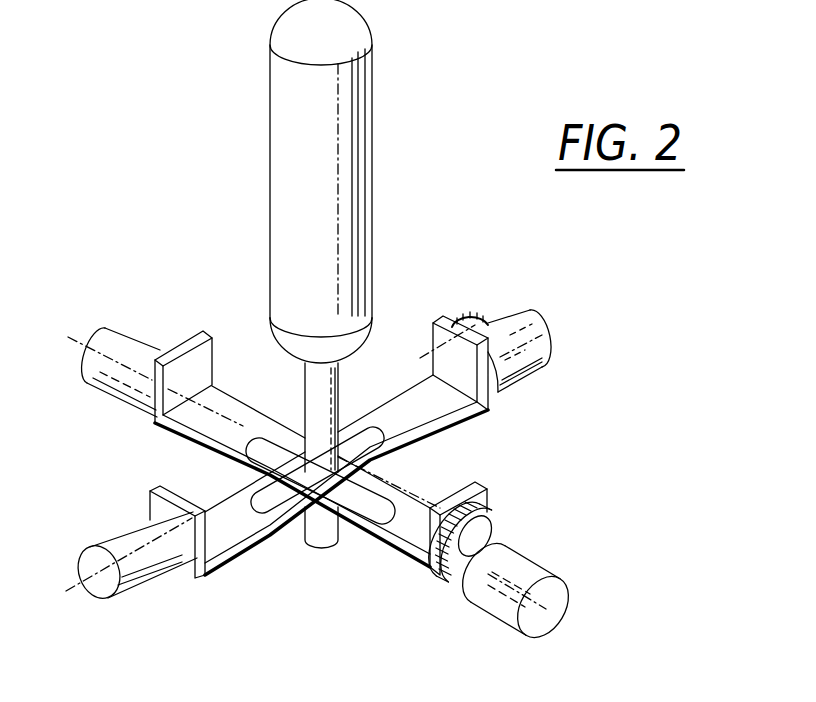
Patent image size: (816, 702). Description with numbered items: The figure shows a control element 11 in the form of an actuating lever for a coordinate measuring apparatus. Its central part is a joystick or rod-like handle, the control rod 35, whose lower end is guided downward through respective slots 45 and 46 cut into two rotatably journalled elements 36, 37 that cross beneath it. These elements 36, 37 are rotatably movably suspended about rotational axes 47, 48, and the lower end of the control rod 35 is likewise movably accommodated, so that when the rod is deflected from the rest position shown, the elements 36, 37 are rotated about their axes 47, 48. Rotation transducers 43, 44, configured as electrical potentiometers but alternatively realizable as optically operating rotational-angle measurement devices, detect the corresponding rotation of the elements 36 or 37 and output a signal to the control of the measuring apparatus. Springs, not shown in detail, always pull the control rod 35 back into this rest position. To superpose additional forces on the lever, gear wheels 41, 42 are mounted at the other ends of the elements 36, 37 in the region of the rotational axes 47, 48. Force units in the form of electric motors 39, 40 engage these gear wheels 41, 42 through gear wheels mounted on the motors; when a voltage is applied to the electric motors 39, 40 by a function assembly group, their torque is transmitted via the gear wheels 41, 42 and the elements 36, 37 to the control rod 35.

The control element 11 is at (164, 130).
The control rod 35 is at (295, 176).
The rotatably journalled element 36 is at (319, 467).
The rotatably journalled element 37 is at (322, 468).
The electric motor 39 is at (543, 608).
The electric motor 40 is at (521, 318).
The gear wheel 41 is at (485, 524).
The gear wheel 42 is at (465, 317).
The rotation transducer 43 is at (112, 328).
The rotation transducer 44 is at (145, 583).
The slot 45 is at (277, 500).
The slot 46 is at (373, 510).
The rotational axis 47 is at (67, 333).
The rotational axis 48 is at (430, 353).